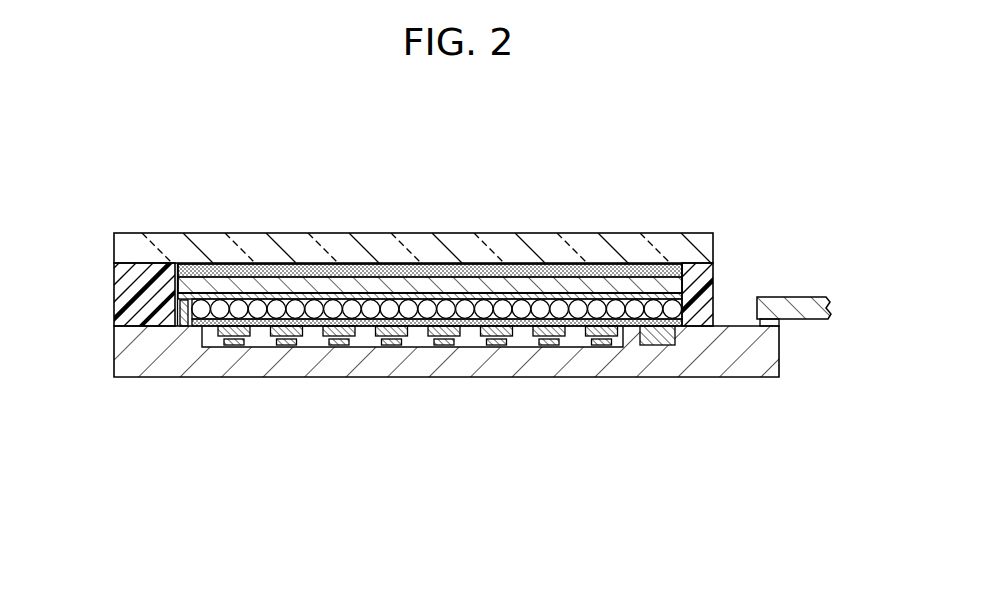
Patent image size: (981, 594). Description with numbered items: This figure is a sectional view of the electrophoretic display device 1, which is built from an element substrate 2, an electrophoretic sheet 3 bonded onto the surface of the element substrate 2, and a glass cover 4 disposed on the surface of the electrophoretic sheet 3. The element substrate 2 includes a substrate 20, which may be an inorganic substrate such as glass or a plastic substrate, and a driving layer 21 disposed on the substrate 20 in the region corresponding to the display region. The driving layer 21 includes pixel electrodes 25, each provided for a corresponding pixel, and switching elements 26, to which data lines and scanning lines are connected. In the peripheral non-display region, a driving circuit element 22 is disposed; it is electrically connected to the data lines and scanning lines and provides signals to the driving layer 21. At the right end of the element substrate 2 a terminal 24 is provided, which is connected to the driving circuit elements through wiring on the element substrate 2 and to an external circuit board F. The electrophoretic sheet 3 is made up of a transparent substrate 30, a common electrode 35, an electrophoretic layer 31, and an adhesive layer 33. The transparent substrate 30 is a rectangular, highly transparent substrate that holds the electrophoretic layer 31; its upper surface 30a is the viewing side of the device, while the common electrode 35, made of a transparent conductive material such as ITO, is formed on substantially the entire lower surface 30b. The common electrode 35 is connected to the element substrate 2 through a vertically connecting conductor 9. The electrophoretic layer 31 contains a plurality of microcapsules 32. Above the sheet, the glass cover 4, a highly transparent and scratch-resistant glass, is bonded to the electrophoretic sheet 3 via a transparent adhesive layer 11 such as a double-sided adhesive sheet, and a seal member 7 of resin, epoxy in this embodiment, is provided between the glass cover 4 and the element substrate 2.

The electrophoretic display device 1 is at (656, 181).
The element substrate 2 is at (592, 476).
The electrophoretic sheet 3 is at (413, 153).
The glass cover 4 is at (138, 240).
The seal member 7 is at (714, 291).
The vertically connecting conductor 9 is at (179, 301).
The transparent adhesive layer 11 is at (245, 270).
The substrate 20 is at (731, 367).
The driving layer 21 is at (611, 352).
The driving circuit element 22 is at (656, 336).
The terminal 24 is at (781, 323).
The pixel electrode 25 is at (323, 331).
The switching element 26 is at (335, 344).
The transparent substrate 30 is at (540, 285).
The upper surface 30a is at (287, 272).
The lower surface 30b is at (368, 290).
The electrophoretic layer 31 is at (585, 288).
The microcapsule 32 is at (420, 323).
The adhesive layer 33 is at (428, 314).
The common electrode 35 is at (486, 292).
The external circuit board F is at (791, 297).